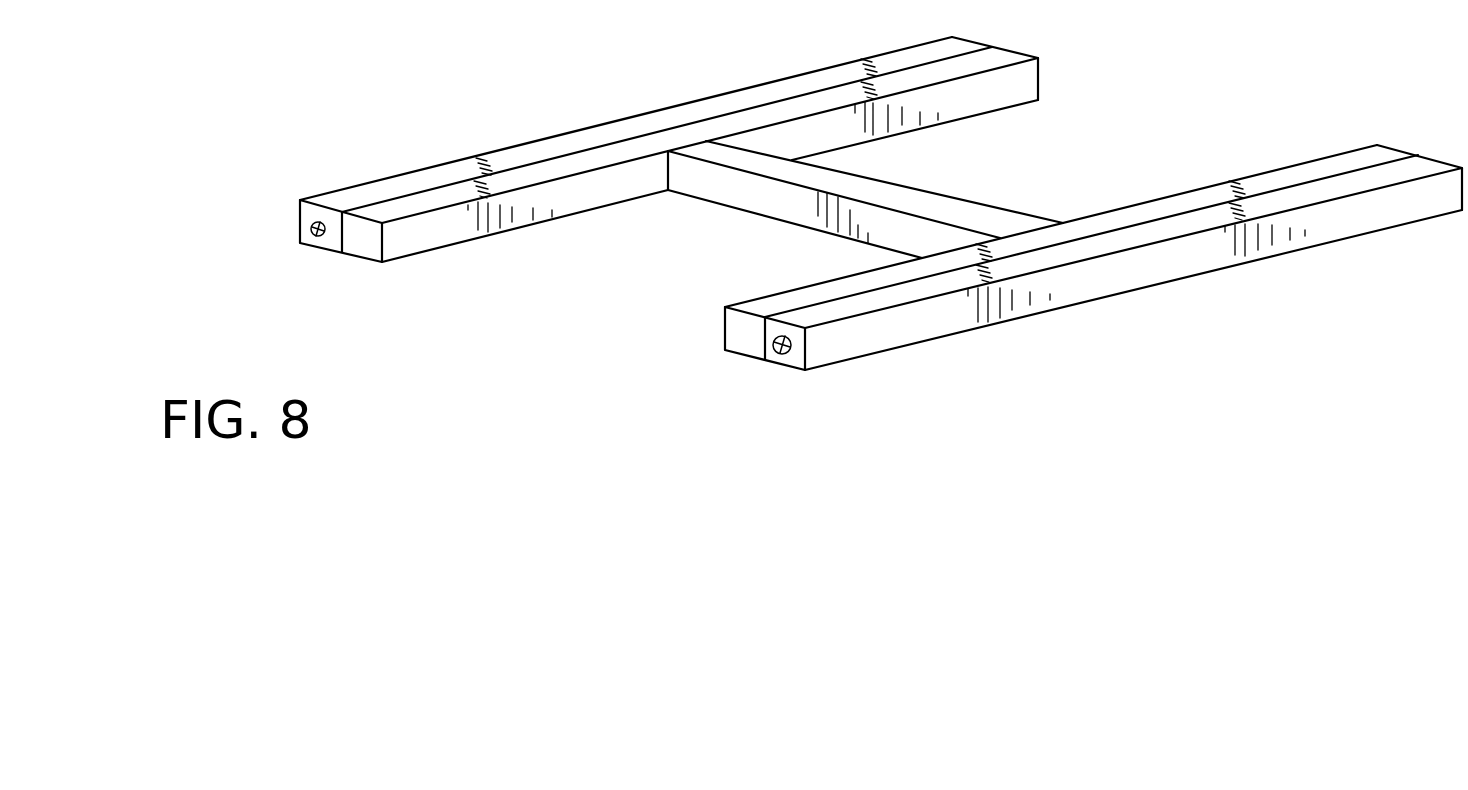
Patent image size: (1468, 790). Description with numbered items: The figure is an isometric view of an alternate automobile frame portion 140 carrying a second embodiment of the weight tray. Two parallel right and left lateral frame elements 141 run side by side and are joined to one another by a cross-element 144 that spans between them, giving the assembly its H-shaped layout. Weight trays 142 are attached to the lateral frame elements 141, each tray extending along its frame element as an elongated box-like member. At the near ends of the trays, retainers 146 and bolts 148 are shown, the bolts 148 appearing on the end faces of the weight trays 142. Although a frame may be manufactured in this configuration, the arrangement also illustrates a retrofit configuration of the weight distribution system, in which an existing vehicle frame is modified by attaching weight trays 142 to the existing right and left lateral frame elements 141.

The automobile frame portion 140 is at (598, 108).
The lateral frame element 141 is at (547, 170).
The weight tray 142 is at (447, 168).
The cross-element 144 is at (915, 193).
The retainer 146 is at (333, 238).
The bolt 148 is at (310, 243).